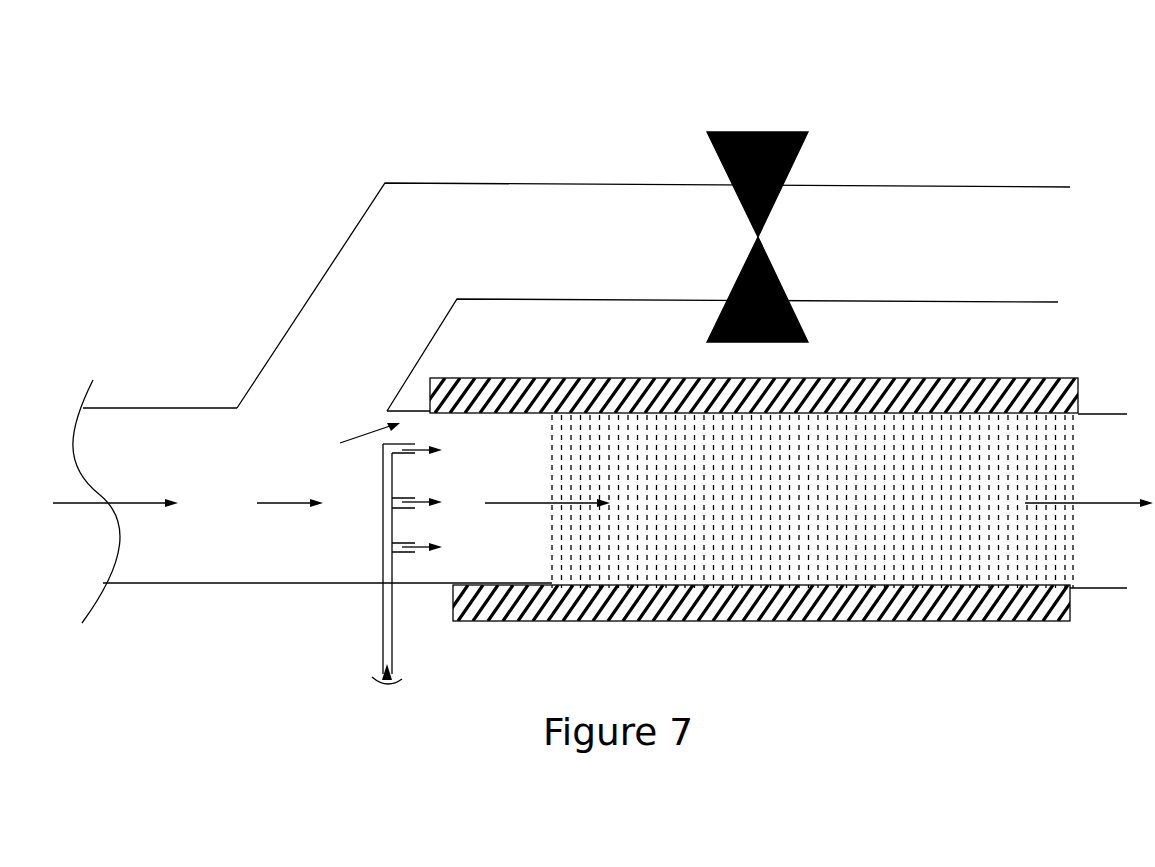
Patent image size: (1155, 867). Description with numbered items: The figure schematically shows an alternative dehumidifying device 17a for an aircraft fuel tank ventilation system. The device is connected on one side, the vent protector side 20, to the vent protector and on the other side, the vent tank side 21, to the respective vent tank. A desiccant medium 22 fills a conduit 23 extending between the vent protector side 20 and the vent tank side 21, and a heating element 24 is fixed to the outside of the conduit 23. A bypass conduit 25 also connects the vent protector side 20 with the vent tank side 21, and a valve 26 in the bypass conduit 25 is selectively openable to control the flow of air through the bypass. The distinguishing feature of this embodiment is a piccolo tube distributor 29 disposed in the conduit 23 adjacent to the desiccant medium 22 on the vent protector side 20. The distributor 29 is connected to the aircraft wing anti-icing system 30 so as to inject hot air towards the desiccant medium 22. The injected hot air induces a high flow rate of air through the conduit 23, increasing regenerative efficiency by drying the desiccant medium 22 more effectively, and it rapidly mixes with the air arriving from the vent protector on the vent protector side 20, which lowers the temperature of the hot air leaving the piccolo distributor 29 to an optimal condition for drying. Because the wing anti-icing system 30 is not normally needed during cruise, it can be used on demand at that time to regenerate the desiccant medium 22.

The dehumidifying device 17a is at (254, 690).
The vent protector side 20 is at (175, 583).
The vent tank side 21 is at (1025, 187).
The desiccant medium 22 is at (967, 543).
The conduit 23 is at (487, 550).
The heating element 24 is at (910, 380).
The bypass conduit 25 is at (530, 184).
The valve 26 is at (757, 132).
The piccolo tube distributor 29 is at (385, 550).
The aircraft wing anti-icing system 30 is at (385, 686).